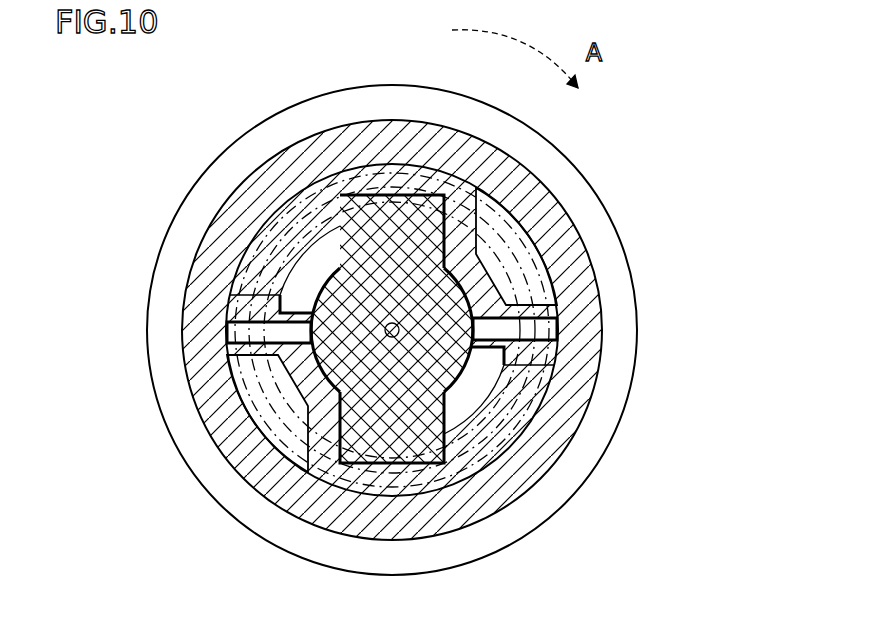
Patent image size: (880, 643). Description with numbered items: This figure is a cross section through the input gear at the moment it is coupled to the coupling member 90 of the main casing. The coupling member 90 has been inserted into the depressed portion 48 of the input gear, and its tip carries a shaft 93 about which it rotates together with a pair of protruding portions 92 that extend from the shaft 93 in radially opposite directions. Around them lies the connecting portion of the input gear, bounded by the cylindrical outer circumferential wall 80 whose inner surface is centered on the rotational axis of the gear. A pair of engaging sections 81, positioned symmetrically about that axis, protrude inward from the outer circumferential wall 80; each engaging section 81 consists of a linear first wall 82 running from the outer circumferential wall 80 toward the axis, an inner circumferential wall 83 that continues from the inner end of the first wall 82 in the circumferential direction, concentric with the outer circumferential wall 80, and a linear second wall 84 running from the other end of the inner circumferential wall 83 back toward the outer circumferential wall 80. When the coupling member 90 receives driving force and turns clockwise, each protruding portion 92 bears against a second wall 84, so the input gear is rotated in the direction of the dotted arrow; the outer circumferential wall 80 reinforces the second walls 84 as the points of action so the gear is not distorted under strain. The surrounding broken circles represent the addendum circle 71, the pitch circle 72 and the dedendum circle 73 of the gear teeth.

The depressed portion 48 is at (300, 277).
The addendum circle 71 is at (525, 414).
The pitch circle 72 is at (510, 434).
The dedendum circle 73 is at (505, 455).
The outer circumferential wall 80 is at (573, 383).
The engaging section 81 is at (657, 94).
The first wall 82 is at (503, 310).
The inner circumferential wall 83 is at (480, 275).
The second wall 84 is at (462, 242).
The coupling member 90 is at (315, 265).
The protruding portion 92 is at (388, 222).
The shaft 93 is at (352, 308).